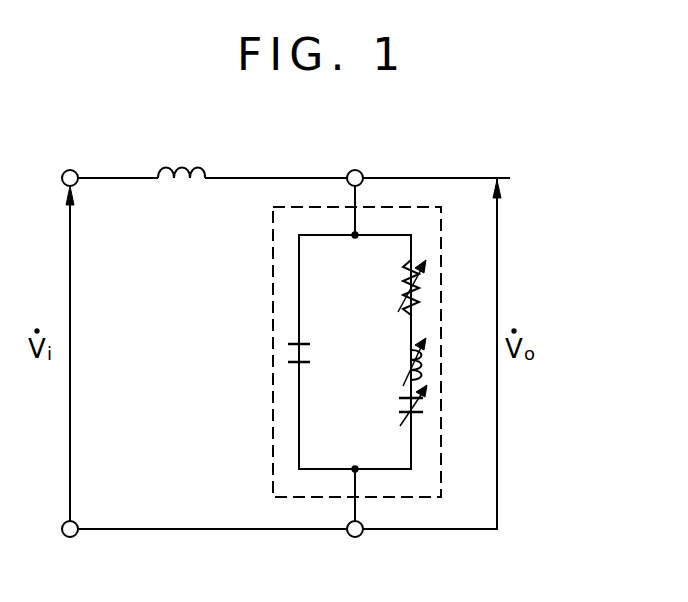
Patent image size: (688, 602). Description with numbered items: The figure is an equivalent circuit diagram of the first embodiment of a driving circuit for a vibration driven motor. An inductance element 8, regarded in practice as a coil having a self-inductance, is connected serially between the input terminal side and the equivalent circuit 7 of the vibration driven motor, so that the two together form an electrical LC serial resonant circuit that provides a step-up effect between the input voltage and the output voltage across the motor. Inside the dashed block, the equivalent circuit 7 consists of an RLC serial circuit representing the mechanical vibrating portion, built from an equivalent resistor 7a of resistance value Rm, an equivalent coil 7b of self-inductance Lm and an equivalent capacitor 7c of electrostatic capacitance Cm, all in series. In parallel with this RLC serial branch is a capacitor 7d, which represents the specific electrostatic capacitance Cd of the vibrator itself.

The inductance element 8 is at (207, 141).
The equivalent circuit of the vibration driven motor 7 is at (410, 207).
The equivalent resistor 7a is at (425, 285).
The equivalent coil 7b is at (420, 368).
The equivalent capacitor 7c is at (428, 408).
The capacitor 7d is at (313, 364).